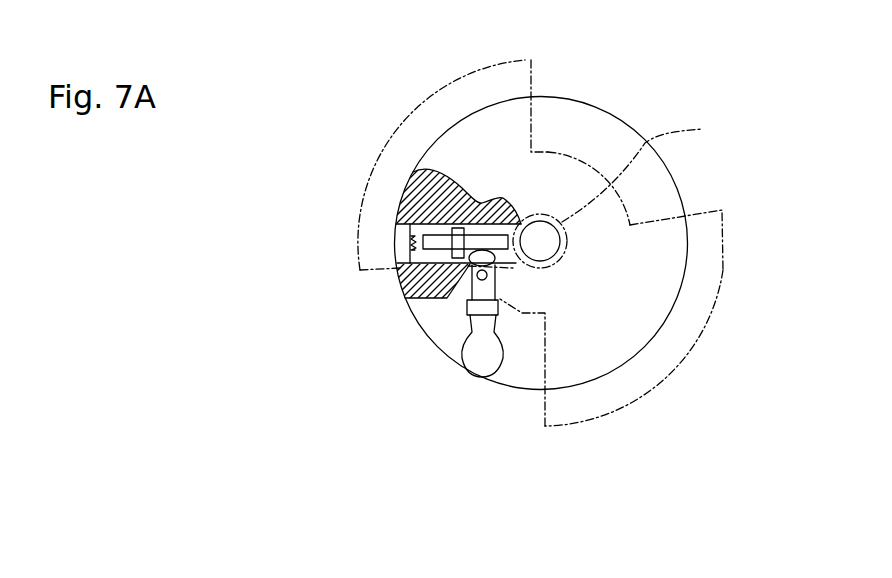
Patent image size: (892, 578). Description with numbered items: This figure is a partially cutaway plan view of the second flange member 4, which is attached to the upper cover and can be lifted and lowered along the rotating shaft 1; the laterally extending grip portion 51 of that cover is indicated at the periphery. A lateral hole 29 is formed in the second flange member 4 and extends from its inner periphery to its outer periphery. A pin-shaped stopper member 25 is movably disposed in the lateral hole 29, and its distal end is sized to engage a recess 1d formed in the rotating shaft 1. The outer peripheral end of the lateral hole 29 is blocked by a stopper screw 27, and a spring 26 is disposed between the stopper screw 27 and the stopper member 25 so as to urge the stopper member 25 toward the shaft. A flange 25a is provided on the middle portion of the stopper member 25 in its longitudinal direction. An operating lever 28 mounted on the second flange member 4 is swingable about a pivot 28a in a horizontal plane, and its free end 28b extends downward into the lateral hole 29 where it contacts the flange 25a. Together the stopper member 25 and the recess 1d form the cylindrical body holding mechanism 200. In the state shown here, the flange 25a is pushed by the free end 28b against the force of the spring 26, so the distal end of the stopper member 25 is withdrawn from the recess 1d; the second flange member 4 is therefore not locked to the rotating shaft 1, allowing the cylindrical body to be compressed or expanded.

The rotating shaft 1 is at (640, 170).
The recess 1d is at (540, 221).
The second flange member 4 is at (653, 193).
The stopper member 25 is at (481, 240).
The flange 25a is at (458, 228).
The spring 26 is at (422, 217).
The stopper screw 27 is at (397, 243).
The operating lever 28 is at (478, 365).
The pivot 28a is at (482, 280).
The free end 28b is at (473, 288).
The lateral hole 29 is at (443, 215).
The grip portion 51 is at (707, 277).
The cylindrical body holding mechanism 200 is at (658, 40).